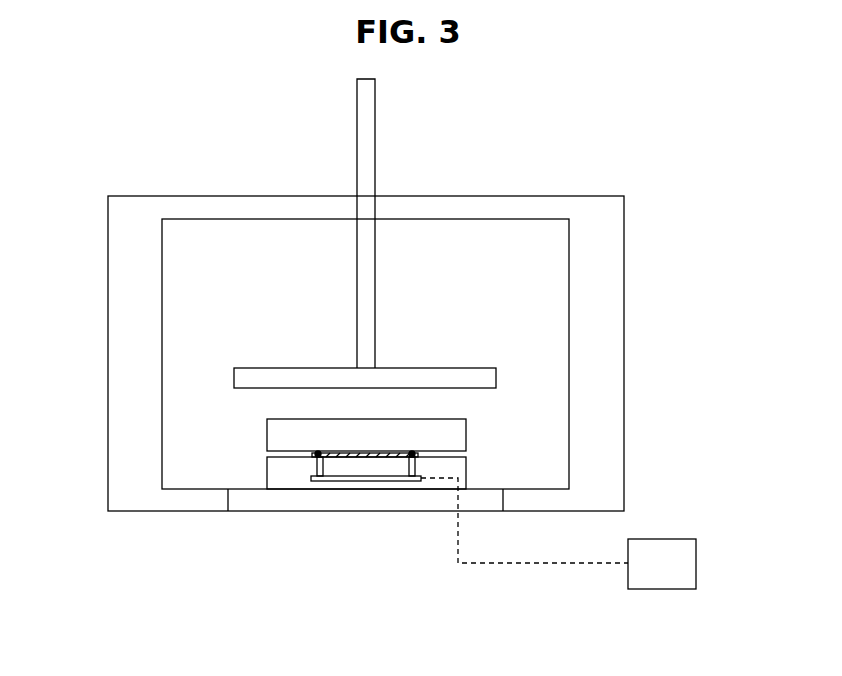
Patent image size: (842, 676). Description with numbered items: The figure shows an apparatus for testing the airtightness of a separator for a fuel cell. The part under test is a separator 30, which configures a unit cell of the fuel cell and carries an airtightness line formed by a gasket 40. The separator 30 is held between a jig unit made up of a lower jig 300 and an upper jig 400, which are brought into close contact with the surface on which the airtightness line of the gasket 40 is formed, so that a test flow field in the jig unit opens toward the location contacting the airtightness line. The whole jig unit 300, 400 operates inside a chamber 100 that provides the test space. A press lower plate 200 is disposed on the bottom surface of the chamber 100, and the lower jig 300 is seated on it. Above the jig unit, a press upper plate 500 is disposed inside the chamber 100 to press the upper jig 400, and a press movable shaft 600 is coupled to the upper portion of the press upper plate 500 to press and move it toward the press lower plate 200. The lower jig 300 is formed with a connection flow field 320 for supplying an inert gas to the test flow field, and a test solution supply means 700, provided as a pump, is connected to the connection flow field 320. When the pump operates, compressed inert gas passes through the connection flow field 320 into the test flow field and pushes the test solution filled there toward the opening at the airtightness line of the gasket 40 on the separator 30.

The chamber 100 is at (612, 397).
The press lower plate 200 is at (277, 500).
The lower jig 300 is at (444, 469).
The connection flow field 320 is at (409, 470).
The upper jig 400 is at (445, 435).
The press upper plate 500 is at (488, 378).
The press movable shaft 600 is at (365, 297).
The test solution supply means 700 is at (697, 563).
The separator 30 is at (345, 458).
The gasket 40 is at (318, 451).